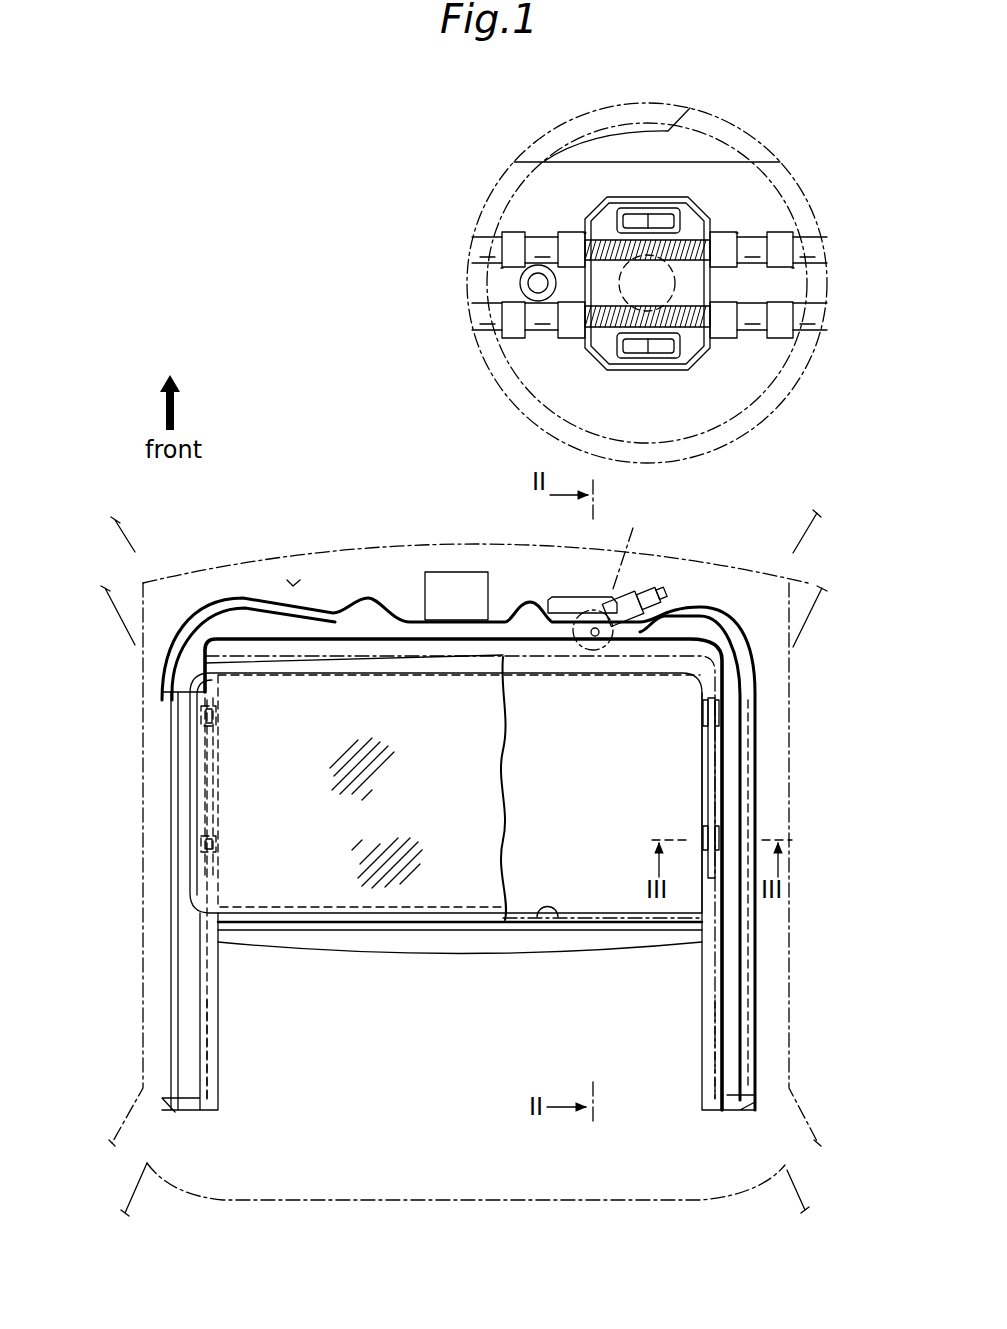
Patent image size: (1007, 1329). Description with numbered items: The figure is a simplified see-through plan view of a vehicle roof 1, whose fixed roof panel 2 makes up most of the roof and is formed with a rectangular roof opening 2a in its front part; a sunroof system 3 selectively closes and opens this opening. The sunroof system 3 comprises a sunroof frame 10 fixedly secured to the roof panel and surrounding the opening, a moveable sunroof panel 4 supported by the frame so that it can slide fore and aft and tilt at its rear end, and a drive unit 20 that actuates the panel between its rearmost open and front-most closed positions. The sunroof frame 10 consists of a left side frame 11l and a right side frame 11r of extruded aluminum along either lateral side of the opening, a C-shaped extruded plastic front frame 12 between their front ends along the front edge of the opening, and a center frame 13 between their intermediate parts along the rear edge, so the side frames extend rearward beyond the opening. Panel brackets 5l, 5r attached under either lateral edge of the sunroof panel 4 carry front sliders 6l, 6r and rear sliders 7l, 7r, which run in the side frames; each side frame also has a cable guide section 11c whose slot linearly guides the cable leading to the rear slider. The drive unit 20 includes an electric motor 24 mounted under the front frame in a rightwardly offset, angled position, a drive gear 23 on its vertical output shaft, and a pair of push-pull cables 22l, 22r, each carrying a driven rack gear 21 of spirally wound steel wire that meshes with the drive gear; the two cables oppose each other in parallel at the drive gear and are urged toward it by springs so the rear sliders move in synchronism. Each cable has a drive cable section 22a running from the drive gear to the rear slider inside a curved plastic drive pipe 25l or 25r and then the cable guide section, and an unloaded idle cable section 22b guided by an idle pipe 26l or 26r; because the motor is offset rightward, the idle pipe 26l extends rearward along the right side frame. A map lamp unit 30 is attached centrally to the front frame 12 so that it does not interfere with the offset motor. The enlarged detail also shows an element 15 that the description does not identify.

The vehicle roof 1 is at (325, 491).
The fixed roof panel 2 is at (290, 568).
The roof opening 2a is at (552, 920).
The sunroof system 3 is at (462, 811).
The sunroof panel 4 is at (383, 900).
The left panel bracket 5l is at (213, 770).
The right panel bracket 5r is at (708, 766).
The left front slider 6l is at (217, 717).
The right front slider 6r is at (703, 712).
The left rear slider 7l is at (217, 846).
The right rear slider 7r is at (703, 833).
The sunroof frame 10 is at (462, 811).
The left side frame 11l is at (172, 858).
The right side frame 11r is at (747, 942).
The cable guide section 11c is at (207, 1032).
The front frame 12 is at (371, 610).
The center frame 13 is at (468, 957).
The drive shaft 15 is at (612, 352).
The drive unit 20 is at (643, 466).
The driven rack gear 21 is at (702, 294).
The drive cable section 22a is at (456, 385).
The idle cable section 22b is at (459, 483).
The left push-pull cable 22l is at (687, 360).
The right push-pull cable 22r is at (695, 194).
The drive gear 23 is at (617, 278).
The electric motor 24 is at (655, 592).
The left drive pipe 25l is at (485, 330).
The right drive pipe 25r is at (810, 237).
The left idle pipe 26l is at (810, 333).
The right idle pipe 26r is at (485, 243).
The map lamp unit 30 is at (458, 572).